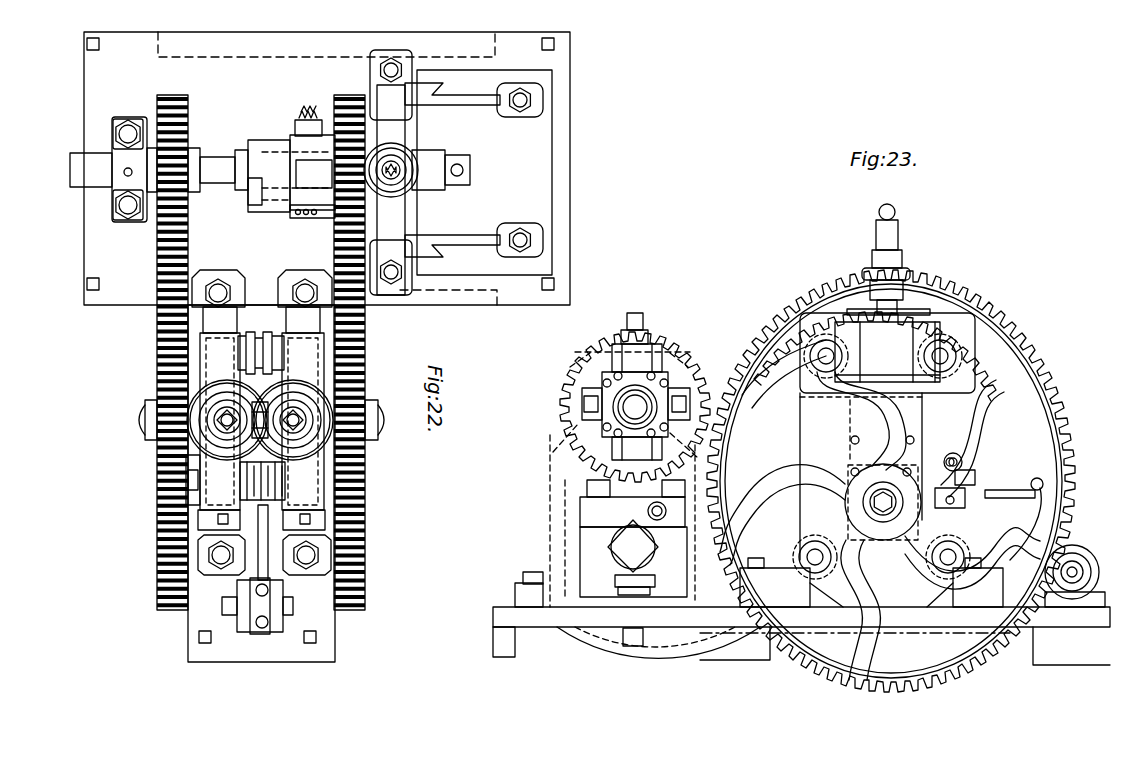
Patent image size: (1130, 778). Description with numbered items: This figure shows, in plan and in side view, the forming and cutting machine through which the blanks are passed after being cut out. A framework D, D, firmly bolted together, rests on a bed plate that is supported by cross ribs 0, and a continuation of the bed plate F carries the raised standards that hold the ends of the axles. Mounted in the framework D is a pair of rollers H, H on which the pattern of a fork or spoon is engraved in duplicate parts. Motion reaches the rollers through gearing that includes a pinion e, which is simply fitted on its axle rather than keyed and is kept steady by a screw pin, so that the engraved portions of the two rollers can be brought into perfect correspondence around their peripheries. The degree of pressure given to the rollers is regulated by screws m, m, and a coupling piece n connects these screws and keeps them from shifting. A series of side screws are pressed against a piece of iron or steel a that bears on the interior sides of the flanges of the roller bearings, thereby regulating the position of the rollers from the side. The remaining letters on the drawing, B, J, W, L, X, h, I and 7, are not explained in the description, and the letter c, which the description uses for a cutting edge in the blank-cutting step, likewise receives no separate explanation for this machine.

In FIG. 22, the continuation of the bed plate F is at (113, 169).
In FIG. 23, the continuation of the bed plate F is at (801, 611).
In FIG. 22, the gear wheel B is at (261, 352).
In FIG. 22, the shaft sleeve J is at (271, 176).
In FIG. 22, the spring W is at (308, 115).
In FIG. 22, the rollers H is at (453, 172).
In FIG. 22, the piece of iron or steel a is at (262, 368).
In FIG. 23, the piece of iron or steel a is at (940, 491).
In FIG. 22, the framework D is at (261, 416).
In FIG. 23, the framework D is at (875, 436).
In FIG. 22, the coupling L is at (258, 515).
In FIG. 22, the bottom bracket X is at (267, 569).
In FIG. 22, the pinion e is at (257, 594).
In FIG. 23, the screws m is at (888, 242).
In FIG. 23, the coupling piece n is at (888, 297).
In FIG. 23, the hub h is at (891, 481).
In FIG. 23, the roller I is at (1075, 587).
In FIG. 23, the cross ribs 0 is at (522, 610).
In FIG. 23, the cutting edge c is at (630, 460).
In FIG. 23, the lower block 7 is at (633, 558).